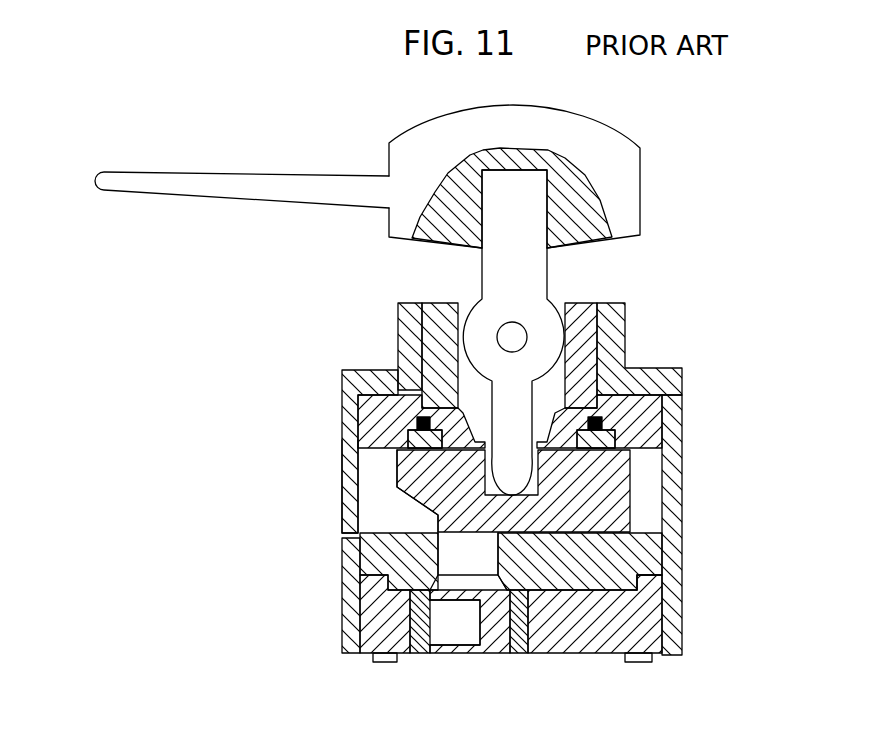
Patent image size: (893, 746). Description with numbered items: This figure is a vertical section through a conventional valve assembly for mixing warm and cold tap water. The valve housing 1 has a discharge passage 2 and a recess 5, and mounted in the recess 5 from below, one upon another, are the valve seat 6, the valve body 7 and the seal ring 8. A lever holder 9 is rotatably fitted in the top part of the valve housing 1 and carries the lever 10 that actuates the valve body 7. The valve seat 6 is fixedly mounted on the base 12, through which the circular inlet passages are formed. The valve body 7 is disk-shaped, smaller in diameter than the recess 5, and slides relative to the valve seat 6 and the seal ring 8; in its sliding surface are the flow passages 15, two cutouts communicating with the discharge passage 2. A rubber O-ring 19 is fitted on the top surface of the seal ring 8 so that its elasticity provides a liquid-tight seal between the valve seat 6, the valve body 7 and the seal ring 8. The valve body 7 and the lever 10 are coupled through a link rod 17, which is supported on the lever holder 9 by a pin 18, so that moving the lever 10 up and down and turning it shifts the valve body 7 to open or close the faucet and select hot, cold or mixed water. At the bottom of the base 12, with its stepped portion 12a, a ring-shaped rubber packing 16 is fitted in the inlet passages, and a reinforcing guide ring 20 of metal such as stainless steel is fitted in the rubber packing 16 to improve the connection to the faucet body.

The valve housing 1 is at (660, 377).
The discharge passage 2 is at (347, 490).
The recess 5 is at (655, 473).
The valve seat 6 is at (623, 555).
The valve body 7 is at (404, 456).
The seal ring 8 is at (615, 440).
The lever holder 9 is at (590, 300).
The lever 10 is at (204, 190).
The base 12 is at (597, 627).
The step portion 12a is at (645, 580).
The flow passages 15 is at (393, 495).
The ring-shaped rubber packing 16 is at (425, 655).
The link rod 17 is at (485, 263).
The pin 18 is at (497, 336).
The rubber O-ring 19 is at (400, 418).
The reinforcing guide ring 20 is at (498, 645).